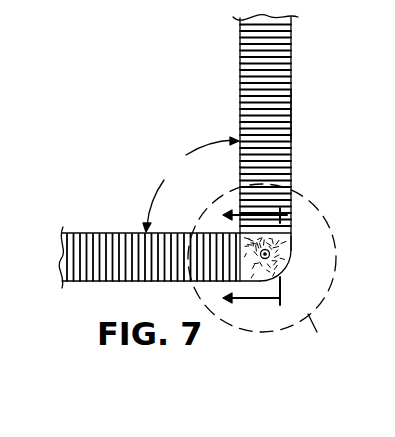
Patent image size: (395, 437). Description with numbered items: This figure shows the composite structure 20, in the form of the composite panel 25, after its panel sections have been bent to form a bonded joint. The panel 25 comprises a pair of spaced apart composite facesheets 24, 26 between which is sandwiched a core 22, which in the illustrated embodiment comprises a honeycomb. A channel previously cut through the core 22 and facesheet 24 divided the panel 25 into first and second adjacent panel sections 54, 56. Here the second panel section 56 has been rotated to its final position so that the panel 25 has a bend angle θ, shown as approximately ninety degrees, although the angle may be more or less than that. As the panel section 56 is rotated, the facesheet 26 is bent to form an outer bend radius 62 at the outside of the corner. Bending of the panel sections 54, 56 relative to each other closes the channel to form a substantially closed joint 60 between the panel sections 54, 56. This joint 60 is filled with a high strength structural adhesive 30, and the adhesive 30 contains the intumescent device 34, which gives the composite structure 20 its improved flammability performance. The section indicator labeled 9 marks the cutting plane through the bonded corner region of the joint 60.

The composite structure 20 is at (188, 100).
The core 22 is at (110, 252).
The facesheet 24 is at (239, 53).
The composite panel 25 is at (183, 142).
The facesheet 26 is at (292, 50).
The structural adhesive 30 is at (253, 283).
The intumescent device 34 is at (292, 237).
The first panel section 54 is at (102, 289).
The second panel section 56 is at (297, 115).
The joint 60 is at (295, 240).
The outer bend radius 62 is at (293, 254).
The section line 9- 9 is at (246, 256).